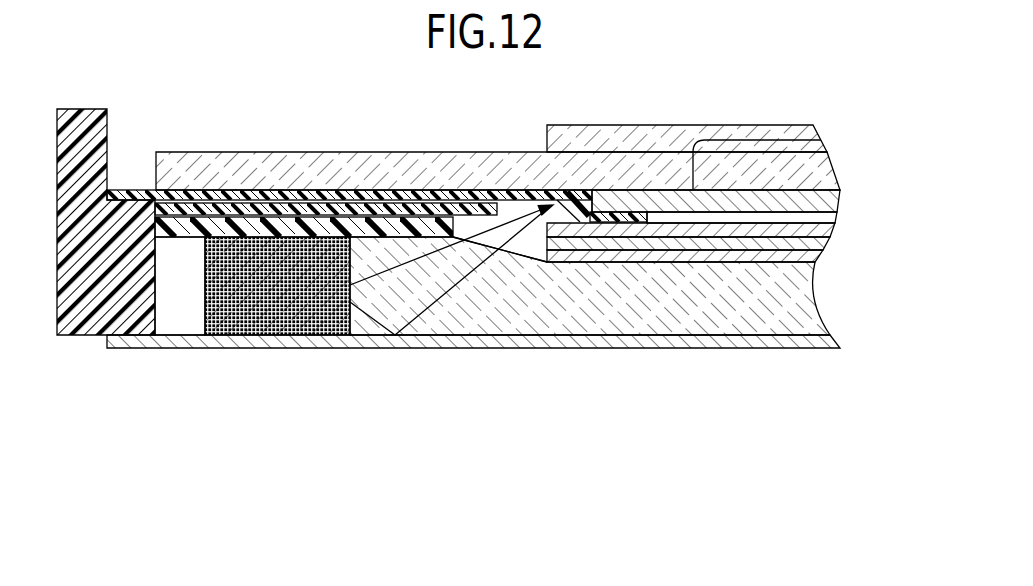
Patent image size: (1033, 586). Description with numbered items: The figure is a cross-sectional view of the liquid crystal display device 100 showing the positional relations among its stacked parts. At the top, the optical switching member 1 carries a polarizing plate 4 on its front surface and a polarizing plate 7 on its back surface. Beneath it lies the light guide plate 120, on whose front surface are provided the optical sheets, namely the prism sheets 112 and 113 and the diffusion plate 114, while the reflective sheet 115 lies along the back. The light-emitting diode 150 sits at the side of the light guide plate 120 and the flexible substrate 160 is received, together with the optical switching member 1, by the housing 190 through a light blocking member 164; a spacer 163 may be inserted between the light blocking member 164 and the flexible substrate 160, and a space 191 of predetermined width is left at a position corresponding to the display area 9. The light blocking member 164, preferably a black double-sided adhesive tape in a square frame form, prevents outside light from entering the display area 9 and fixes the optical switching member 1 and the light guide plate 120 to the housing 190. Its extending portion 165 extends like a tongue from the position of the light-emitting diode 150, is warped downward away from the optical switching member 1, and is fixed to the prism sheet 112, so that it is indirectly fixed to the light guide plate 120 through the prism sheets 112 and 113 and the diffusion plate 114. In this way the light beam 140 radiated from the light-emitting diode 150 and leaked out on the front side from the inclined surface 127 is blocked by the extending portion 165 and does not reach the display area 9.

The liquid crystal display device 100 is at (462, 452).
The optical switching member 1 is at (833, 167).
The polarizing plate 4 is at (818, 132).
The polarizing plate 7 is at (842, 193).
The display area 9 is at (758, 138).
The prism sheet 112 is at (832, 231).
The prism sheet 113 is at (826, 247).
The diffusion plate 114 is at (818, 258).
The reflective sheet 115 is at (773, 340).
The light guide plate 120 is at (817, 304).
The inclined surface 127 is at (545, 262).
The light beam 140 is at (382, 272).
The light-emitting diode 150 is at (287, 310).
The flexible substrate 160 is at (184, 238).
The spacer 163 is at (248, 213).
The light blocking member 164 is at (128, 190).
The extending portion 165 is at (583, 207).
The housing 190 is at (78, 320).
The space 191 is at (840, 220).